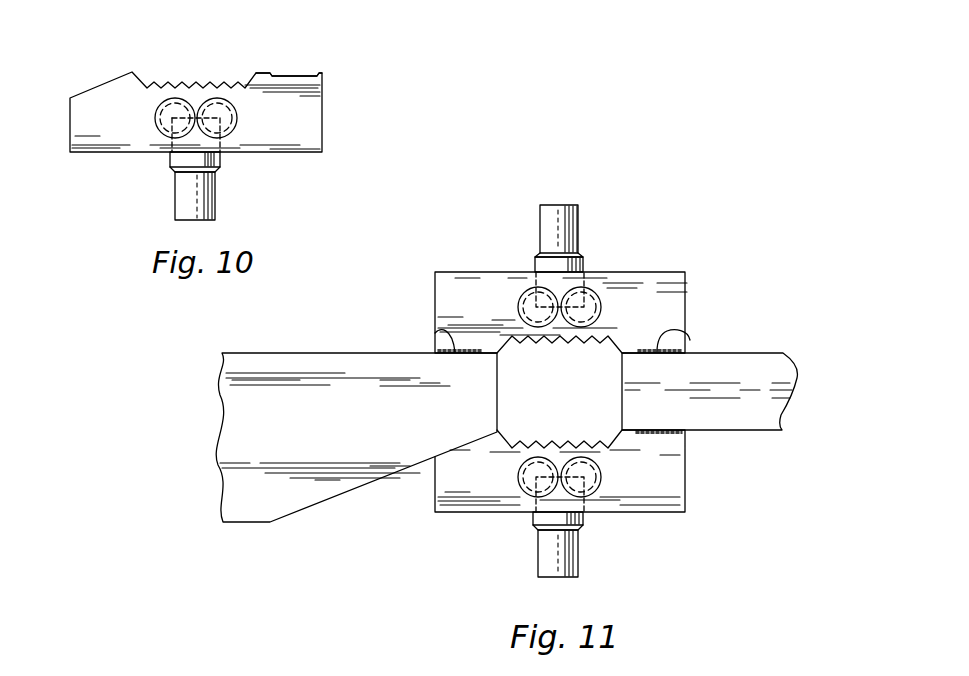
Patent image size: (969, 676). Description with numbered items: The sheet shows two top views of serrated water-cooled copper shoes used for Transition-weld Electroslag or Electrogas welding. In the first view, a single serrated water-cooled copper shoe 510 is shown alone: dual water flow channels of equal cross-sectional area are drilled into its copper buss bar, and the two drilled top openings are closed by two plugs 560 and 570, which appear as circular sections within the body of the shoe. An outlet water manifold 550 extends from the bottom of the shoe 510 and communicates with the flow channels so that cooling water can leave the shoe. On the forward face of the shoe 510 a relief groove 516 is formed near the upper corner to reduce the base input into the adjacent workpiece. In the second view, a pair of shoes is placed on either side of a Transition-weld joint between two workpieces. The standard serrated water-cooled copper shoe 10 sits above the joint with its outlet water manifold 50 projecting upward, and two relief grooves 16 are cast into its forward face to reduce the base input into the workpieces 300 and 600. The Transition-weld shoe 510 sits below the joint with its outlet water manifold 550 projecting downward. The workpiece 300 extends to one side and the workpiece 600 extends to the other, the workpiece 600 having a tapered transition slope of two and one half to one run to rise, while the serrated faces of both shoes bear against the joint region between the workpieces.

In FIG. 11, the serrated water-cooled copper shoe 10 is at (650, 285).
In FIG. 11, the relief grooves 16 is at (435, 333).
In FIG. 11, the outlet water manifold 50 is at (548, 232).
In FIG. 11, the workpiece 300 is at (738, 413).
In FIG. 10, the serrated water-cooled copper shoe 510 is at (177, 69).
In FIG. 11, the serrated water-cooled copper shoe 510 is at (650, 495).
In FIG. 10, the relief groove 516 is at (300, 72).
In FIG. 10, the outlet water manifold 550 is at (187, 197).
In FIG. 11, the outlet water manifold 550 is at (547, 550).
In FIG. 10, the plug 560 is at (230, 122).
In FIG. 10, the plug 570 is at (166, 117).
In FIG. 11, the workpiece 600 is at (330, 370).